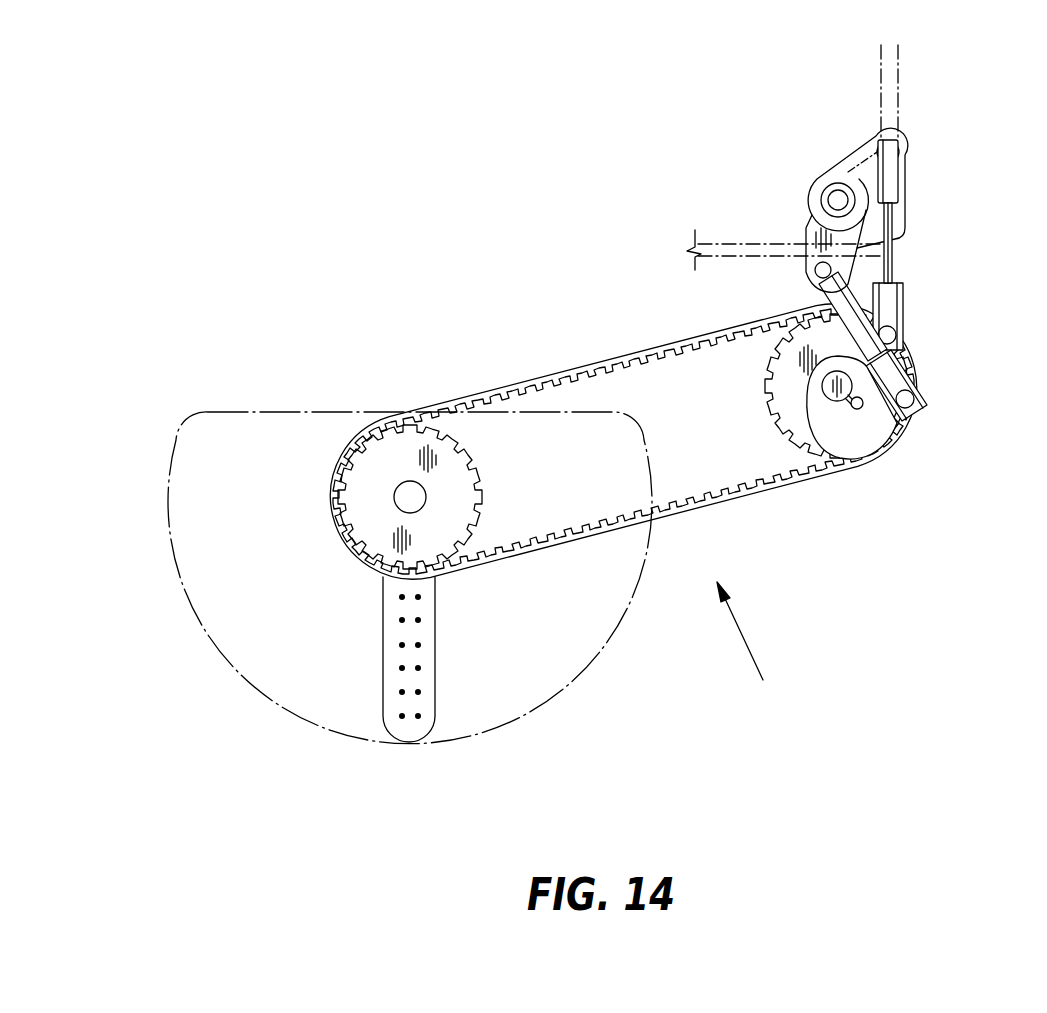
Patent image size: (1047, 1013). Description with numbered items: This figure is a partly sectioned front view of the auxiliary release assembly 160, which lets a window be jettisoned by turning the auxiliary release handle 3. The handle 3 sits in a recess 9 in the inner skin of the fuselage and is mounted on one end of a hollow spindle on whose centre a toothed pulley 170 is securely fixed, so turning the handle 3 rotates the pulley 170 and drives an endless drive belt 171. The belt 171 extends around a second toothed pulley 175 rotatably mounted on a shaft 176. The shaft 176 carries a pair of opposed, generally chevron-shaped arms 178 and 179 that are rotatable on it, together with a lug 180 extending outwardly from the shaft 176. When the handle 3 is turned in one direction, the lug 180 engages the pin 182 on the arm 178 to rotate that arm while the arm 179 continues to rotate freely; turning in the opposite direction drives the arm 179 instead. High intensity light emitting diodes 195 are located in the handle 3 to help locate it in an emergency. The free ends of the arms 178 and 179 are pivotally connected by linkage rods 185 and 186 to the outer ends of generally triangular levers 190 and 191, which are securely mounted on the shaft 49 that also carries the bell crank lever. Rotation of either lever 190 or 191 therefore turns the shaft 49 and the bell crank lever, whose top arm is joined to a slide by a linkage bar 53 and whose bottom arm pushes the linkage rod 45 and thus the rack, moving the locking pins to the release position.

The auxiliary release handle 3 is at (384, 652).
The recess 9 is at (160, 490).
The linkage rod 45 is at (720, 242).
The shaft 49 is at (837, 200).
The linkage bar 53 is at (903, 92).
The auxiliary release assembly 160 is at (761, 652).
The toothed pulley 170 is at (350, 497).
The endless drive belt 171 is at (605, 360).
The second toothed pulley 175 is at (790, 432).
The shaft 176 is at (830, 390).
The arm 178 is at (897, 423).
The arm 179 is at (908, 358).
The lug 180 is at (855, 408).
The pin 182 is at (900, 428).
The linkage rod 185 is at (842, 322).
The linkage rod 186 is at (895, 235).
The triangular lever 190 is at (815, 232).
The triangular lever 191 is at (853, 160).
The light emitting diodes 195 is at (418, 692).